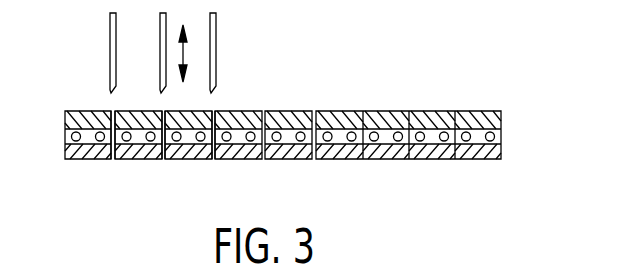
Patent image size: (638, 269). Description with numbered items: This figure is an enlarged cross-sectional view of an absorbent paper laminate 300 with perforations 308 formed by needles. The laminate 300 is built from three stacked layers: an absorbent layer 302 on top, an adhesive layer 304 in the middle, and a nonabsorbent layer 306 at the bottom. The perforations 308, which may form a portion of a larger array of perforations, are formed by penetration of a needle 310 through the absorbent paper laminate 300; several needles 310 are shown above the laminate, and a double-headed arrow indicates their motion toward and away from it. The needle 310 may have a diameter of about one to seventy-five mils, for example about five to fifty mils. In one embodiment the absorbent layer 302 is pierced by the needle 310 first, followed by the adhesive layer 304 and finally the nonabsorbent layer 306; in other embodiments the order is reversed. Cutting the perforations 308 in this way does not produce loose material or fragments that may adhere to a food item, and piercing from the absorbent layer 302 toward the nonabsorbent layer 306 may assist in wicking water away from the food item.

The absorbent paper laminate 300 is at (305, 119).
The absorbent layer 302 is at (297, 112).
The adhesive layer 304 is at (481, 135).
The nonabsorbent layer 306 is at (250, 153).
The perforations 308 is at (113, 160).
The needle 310 is at (215, 52).